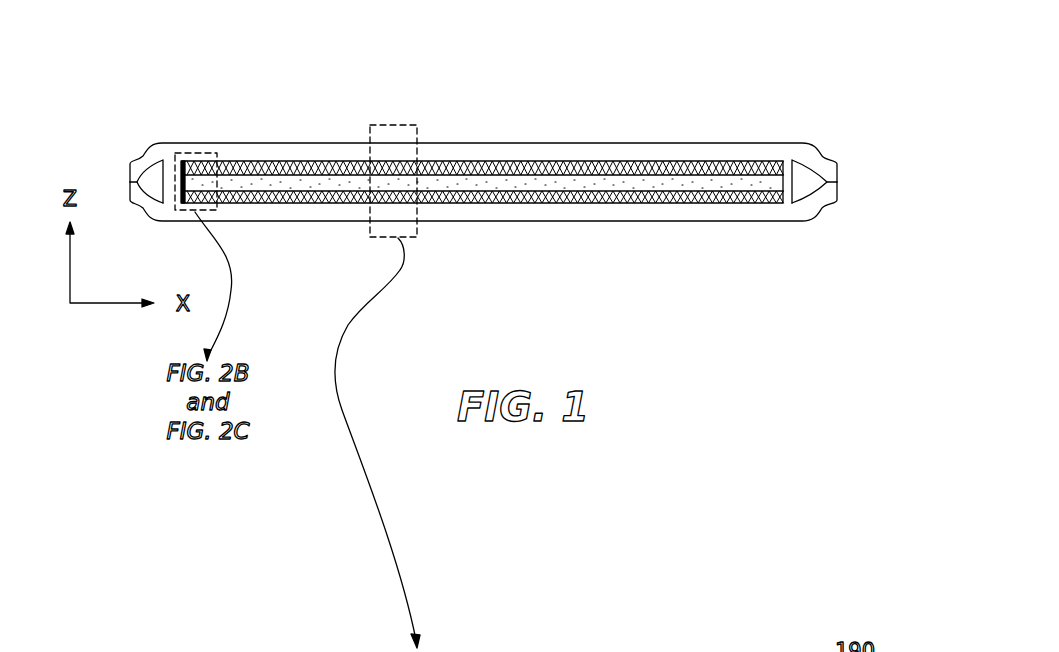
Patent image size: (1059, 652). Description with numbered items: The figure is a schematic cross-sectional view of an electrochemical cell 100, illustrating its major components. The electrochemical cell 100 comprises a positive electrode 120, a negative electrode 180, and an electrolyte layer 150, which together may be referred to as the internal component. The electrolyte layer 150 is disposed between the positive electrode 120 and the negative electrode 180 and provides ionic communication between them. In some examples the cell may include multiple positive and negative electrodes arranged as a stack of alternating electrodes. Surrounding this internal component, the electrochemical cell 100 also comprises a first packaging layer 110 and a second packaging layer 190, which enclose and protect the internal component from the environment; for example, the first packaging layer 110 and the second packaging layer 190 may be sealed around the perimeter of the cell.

The electrochemical cell 100 is at (499, 161).
The first packaging layer 110 is at (728, 210).
The second packaging layer 190 is at (728, 153).
The electrolyte layer 150 is at (482, 239).
The positive electrode 120 is at (670, 202).
The negative electrode 180 is at (477, 159).